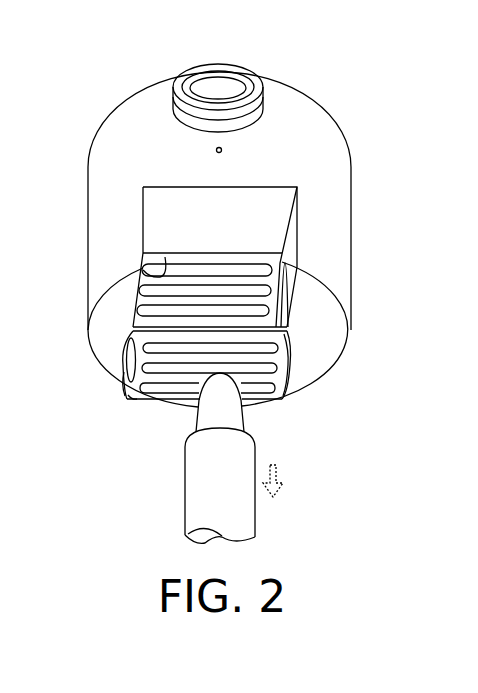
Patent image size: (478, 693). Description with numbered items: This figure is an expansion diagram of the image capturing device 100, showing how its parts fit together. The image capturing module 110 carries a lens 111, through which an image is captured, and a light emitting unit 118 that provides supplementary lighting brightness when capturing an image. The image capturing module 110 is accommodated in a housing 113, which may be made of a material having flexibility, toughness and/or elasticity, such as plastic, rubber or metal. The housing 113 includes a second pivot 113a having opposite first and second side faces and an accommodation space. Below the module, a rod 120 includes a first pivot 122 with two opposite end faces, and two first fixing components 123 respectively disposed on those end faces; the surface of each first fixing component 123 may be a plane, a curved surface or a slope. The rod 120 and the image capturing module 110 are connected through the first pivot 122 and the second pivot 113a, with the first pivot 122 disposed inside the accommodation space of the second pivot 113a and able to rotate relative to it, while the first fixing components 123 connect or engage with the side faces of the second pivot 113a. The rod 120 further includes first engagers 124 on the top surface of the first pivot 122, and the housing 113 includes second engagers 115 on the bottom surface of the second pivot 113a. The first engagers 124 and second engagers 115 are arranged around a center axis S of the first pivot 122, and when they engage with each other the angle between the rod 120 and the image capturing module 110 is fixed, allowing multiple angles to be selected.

The image capturing device 100 is at (145, 60).
The image capturing module 110 is at (351, 176).
The lens 111 is at (222, 95).
The light emitting unit 118 is at (214, 151).
The housing 113 is at (330, 348).
The second pivot 113a is at (141, 268).
The second engager 115 is at (272, 268).
The rod 120 is at (207, 396).
The first engager 124 is at (256, 387).
The first fixing component 123 is at (121, 372).
The first pivot 122 is at (135, 397).
The center axis S is at (123, 363).